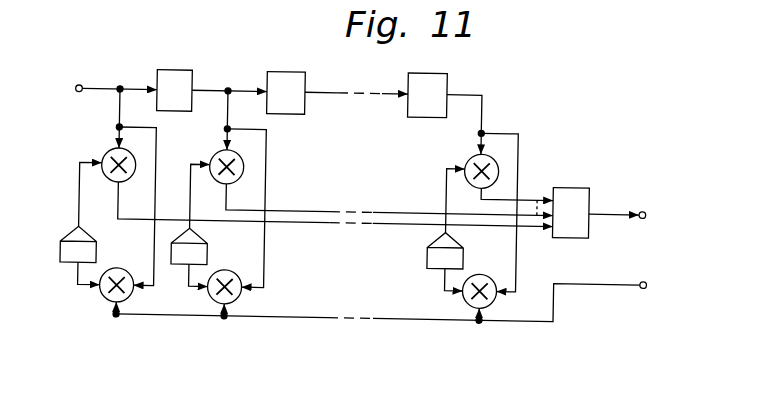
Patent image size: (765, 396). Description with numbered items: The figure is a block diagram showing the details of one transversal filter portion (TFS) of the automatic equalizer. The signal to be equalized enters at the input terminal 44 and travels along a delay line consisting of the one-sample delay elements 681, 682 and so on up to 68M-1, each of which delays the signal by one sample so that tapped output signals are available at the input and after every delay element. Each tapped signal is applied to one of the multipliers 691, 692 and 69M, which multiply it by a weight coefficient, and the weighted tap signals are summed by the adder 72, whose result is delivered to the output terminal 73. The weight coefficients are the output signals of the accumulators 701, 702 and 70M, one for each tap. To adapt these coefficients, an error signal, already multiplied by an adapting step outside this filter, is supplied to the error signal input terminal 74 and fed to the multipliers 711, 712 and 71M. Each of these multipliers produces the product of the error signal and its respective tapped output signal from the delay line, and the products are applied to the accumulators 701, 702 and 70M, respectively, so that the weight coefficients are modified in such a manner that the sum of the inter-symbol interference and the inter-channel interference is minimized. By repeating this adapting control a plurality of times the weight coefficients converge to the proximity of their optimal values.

The input terminal 44 is at (77, 86).
The one-sample delay element 681 is at (180, 69).
The one-sample delay element 682 is at (305, 75).
The one-sample delay element 68M-1 is at (447, 74).
The multiplier 691 is at (102, 152).
The multiplier 692 is at (215, 151).
The multiplier 69M is at (471, 150).
The accumulator 701 is at (99, 248).
The accumulator 702 is at (210, 250).
The accumulator 70M is at (472, 246).
The multiplier 711 is at (105, 296).
The multiplier 712 is at (214, 297).
The multiplier 71M is at (466, 293).
The adder 72 is at (582, 180).
The output terminal 73 is at (647, 203).
The error signal input terminal 74 is at (649, 273).